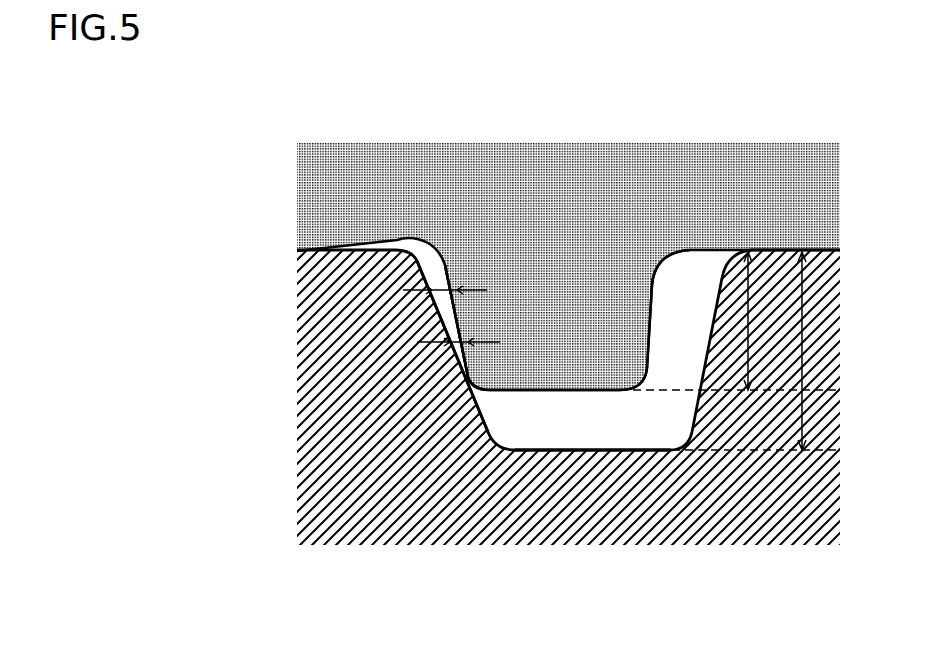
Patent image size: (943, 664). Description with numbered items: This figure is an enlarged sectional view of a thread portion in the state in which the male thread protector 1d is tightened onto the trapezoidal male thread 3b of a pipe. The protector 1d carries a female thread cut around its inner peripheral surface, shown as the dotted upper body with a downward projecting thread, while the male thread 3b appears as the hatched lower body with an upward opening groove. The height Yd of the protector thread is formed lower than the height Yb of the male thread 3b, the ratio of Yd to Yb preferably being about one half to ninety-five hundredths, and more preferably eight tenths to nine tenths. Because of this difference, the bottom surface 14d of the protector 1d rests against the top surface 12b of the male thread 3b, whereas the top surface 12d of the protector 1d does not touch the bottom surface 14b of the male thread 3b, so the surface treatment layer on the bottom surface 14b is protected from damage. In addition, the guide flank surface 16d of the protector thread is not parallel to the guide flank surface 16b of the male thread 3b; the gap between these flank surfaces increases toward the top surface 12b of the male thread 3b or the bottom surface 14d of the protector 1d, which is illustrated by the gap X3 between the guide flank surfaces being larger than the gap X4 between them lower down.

The male thread protector 1d is at (565, 131).
The male thread 3b is at (574, 557).
The top surface of the male thread 12b is at (326, 249).
The top surface of the protector 12d is at (599, 387).
The bottom surface of the male thread protector 14d is at (400, 240).
The bottom surface of the male thread 14b is at (645, 449).
The guide flank surface of the male thread 16b is at (436, 311).
The guide flank surface of the thread portion of the protector 16d is at (461, 319).
The gap between the guide flank surfaces X3 is at (450, 279).
The gap between the guide flank surfaces X4 is at (464, 352).
The height of the thread of the protector Yd is at (763, 321).
The height of the thread of the male thread Yb is at (818, 351).